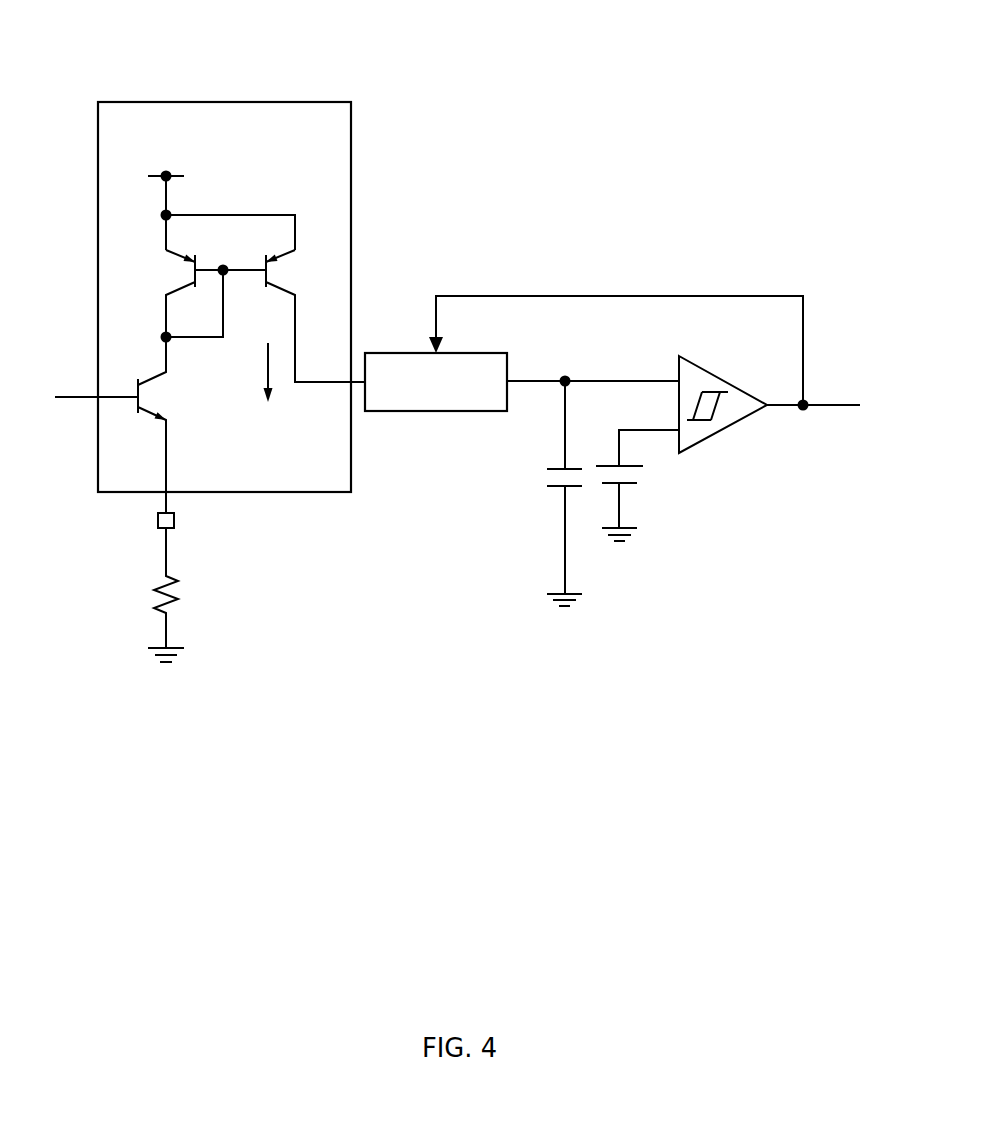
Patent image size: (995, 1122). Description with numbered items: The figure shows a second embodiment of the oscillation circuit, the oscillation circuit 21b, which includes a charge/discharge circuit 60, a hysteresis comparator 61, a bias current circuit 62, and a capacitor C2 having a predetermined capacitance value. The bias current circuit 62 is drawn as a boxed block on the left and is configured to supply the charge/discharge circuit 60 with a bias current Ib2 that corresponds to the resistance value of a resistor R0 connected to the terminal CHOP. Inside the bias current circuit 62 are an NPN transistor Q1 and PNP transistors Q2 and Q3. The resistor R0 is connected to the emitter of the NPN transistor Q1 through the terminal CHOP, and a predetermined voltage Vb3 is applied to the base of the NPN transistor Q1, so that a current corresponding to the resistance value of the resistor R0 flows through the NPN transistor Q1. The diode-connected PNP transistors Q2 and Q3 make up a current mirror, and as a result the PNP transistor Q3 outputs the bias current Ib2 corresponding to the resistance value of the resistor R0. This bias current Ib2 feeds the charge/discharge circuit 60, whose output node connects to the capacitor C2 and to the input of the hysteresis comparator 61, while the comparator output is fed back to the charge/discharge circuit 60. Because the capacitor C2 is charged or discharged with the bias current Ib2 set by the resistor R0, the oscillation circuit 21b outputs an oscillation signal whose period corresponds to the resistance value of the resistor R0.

The oscillation circuit 21b is at (556, 72).
The bias current circuit 62 is at (134, 102).
The charge/discharge circuit 60 is at (383, 411).
The hysteresis comparator 61 is at (683, 454).
The NPN transistor Q1 is at (164, 372).
The PNP transistor Q2 is at (164, 293).
The PNP transistor Q3 is at (272, 257).
The capacitor C2 is at (552, 466).
The resistor R0 is at (172, 608).
The terminal CHOP is at (177, 530).
The predetermined voltage Vb3 is at (89, 381).
The bias current Ib2 is at (249, 372).